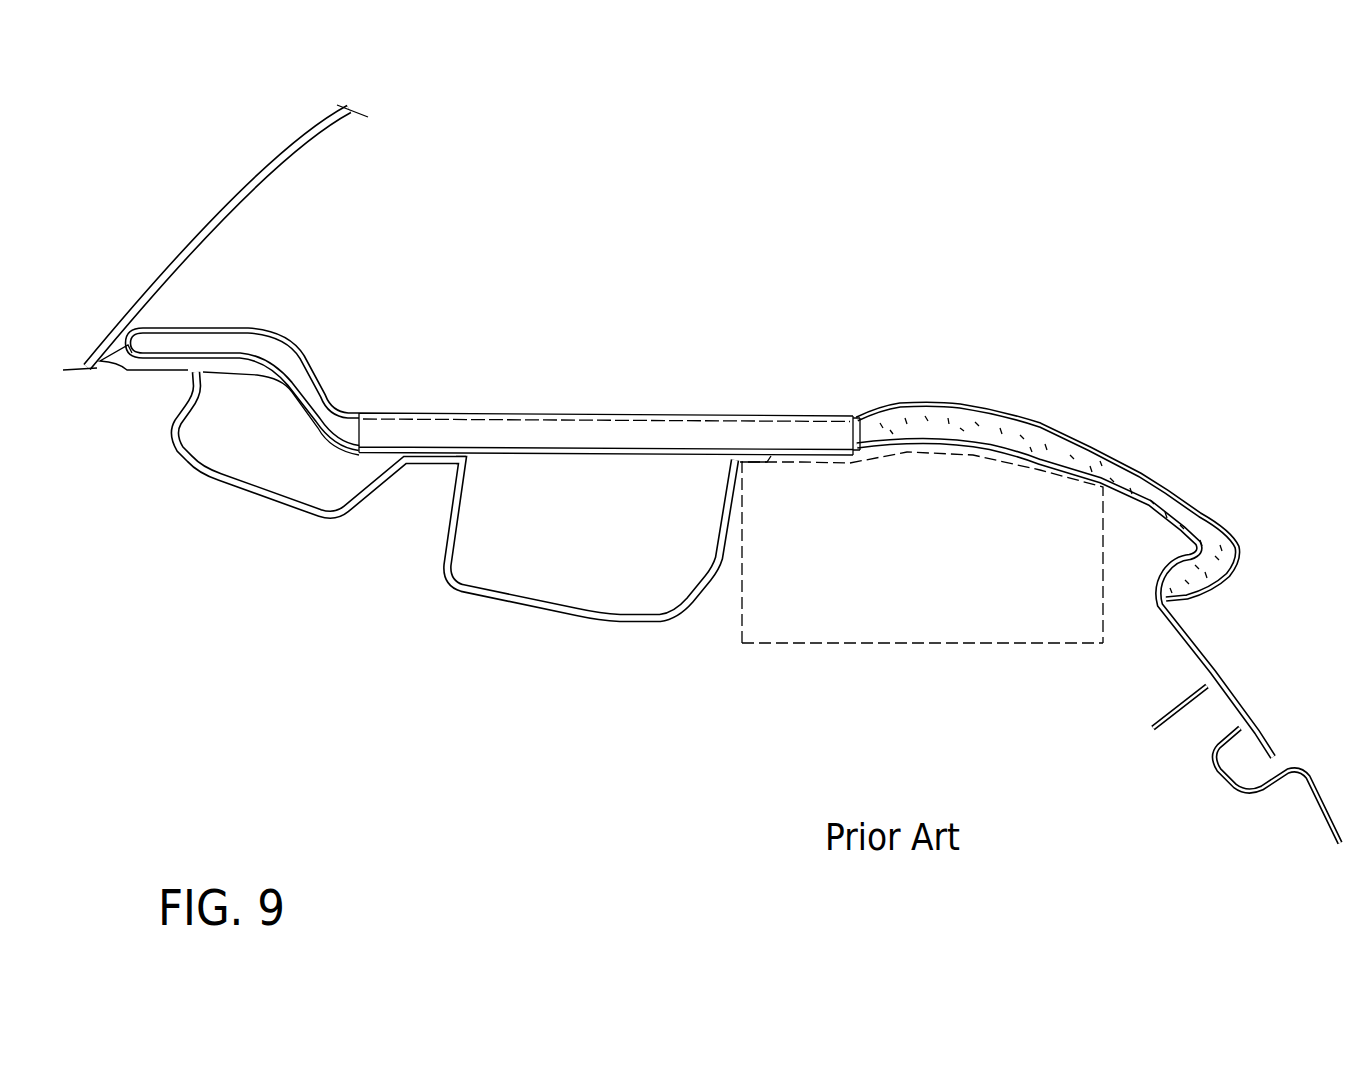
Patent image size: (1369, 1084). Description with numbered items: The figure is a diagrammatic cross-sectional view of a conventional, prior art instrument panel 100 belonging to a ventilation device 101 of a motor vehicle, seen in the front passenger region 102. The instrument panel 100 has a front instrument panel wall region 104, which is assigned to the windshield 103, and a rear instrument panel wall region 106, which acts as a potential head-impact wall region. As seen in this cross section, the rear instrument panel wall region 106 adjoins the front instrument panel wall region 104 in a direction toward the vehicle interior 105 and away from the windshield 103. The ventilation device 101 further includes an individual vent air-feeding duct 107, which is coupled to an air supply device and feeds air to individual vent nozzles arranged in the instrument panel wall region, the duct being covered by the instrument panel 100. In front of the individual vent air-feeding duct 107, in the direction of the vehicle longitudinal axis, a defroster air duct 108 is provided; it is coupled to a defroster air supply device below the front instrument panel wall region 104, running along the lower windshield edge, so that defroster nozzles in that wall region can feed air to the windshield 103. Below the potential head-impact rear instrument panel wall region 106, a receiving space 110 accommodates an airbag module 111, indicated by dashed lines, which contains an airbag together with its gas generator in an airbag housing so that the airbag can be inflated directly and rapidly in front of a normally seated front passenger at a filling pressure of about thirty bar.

The instrument panel 100 is at (611, 379).
The ventilation device 101 is at (414, 650).
The front passenger region 102 is at (1128, 386).
The windshield 103 is at (240, 197).
The front instrument panel wall region 104 is at (416, 379).
The vehicle interior 105 is at (1277, 488).
The rear instrument panel wall region 106 is at (1048, 394).
The individual vent air-feeding duct 107 is at (580, 610).
The defroster air duct 108 is at (220, 470).
The receiving space 110 is at (866, 668).
The airbag module 111 is at (1077, 644).